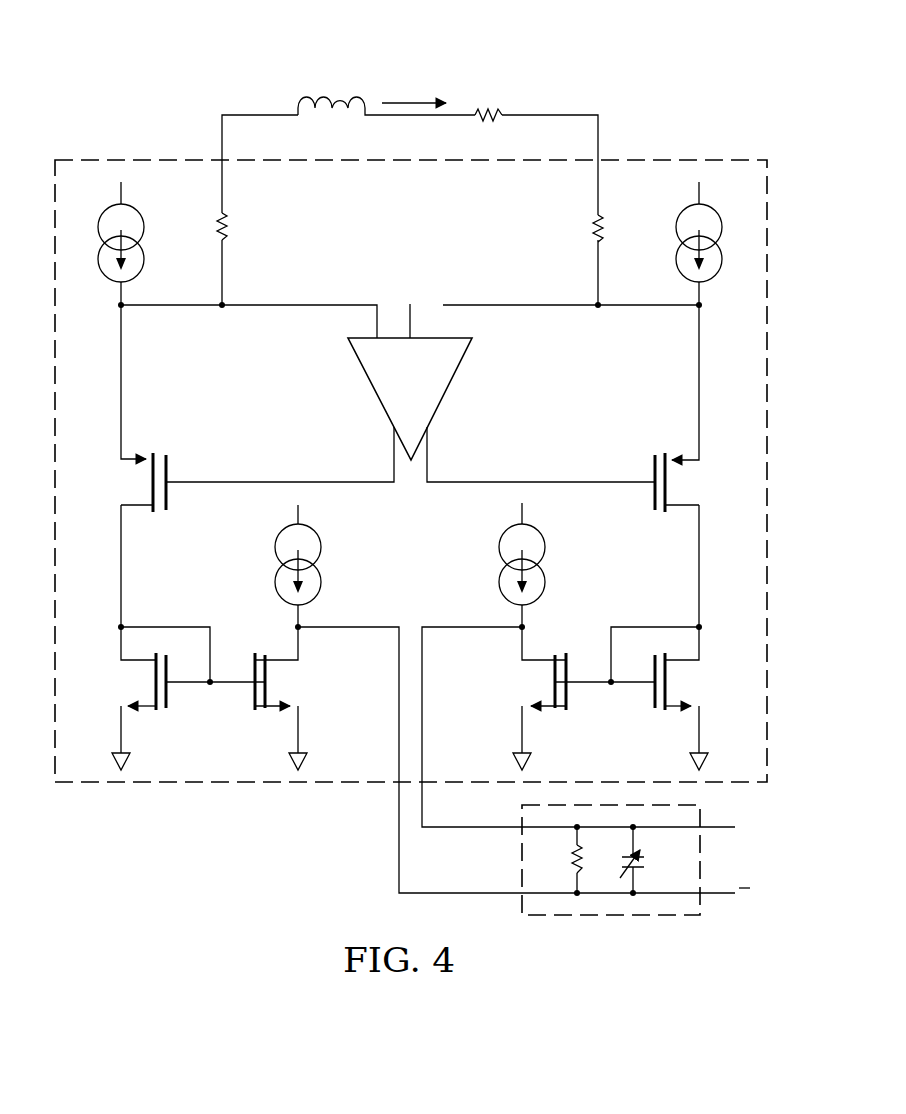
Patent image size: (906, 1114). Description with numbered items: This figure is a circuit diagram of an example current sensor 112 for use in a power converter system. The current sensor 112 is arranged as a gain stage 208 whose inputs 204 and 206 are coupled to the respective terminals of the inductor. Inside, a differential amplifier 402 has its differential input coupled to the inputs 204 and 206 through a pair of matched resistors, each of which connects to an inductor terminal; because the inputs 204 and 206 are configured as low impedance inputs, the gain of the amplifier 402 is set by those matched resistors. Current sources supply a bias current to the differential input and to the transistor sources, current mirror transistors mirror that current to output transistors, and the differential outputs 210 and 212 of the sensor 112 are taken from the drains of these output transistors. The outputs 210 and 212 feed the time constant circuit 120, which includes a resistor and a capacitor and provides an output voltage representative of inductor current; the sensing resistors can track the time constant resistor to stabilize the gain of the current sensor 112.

The current sensor 112 is at (118, 68).
The input 204 is at (260, 113).
The input 206 is at (556, 113).
The differential amplifier 402 is at (372, 390).
The gain stage 208 is at (329, 785).
The output 212 is at (350, 626).
The output 210 is at (470, 626).
The time constant circuit 120 is at (640, 921).